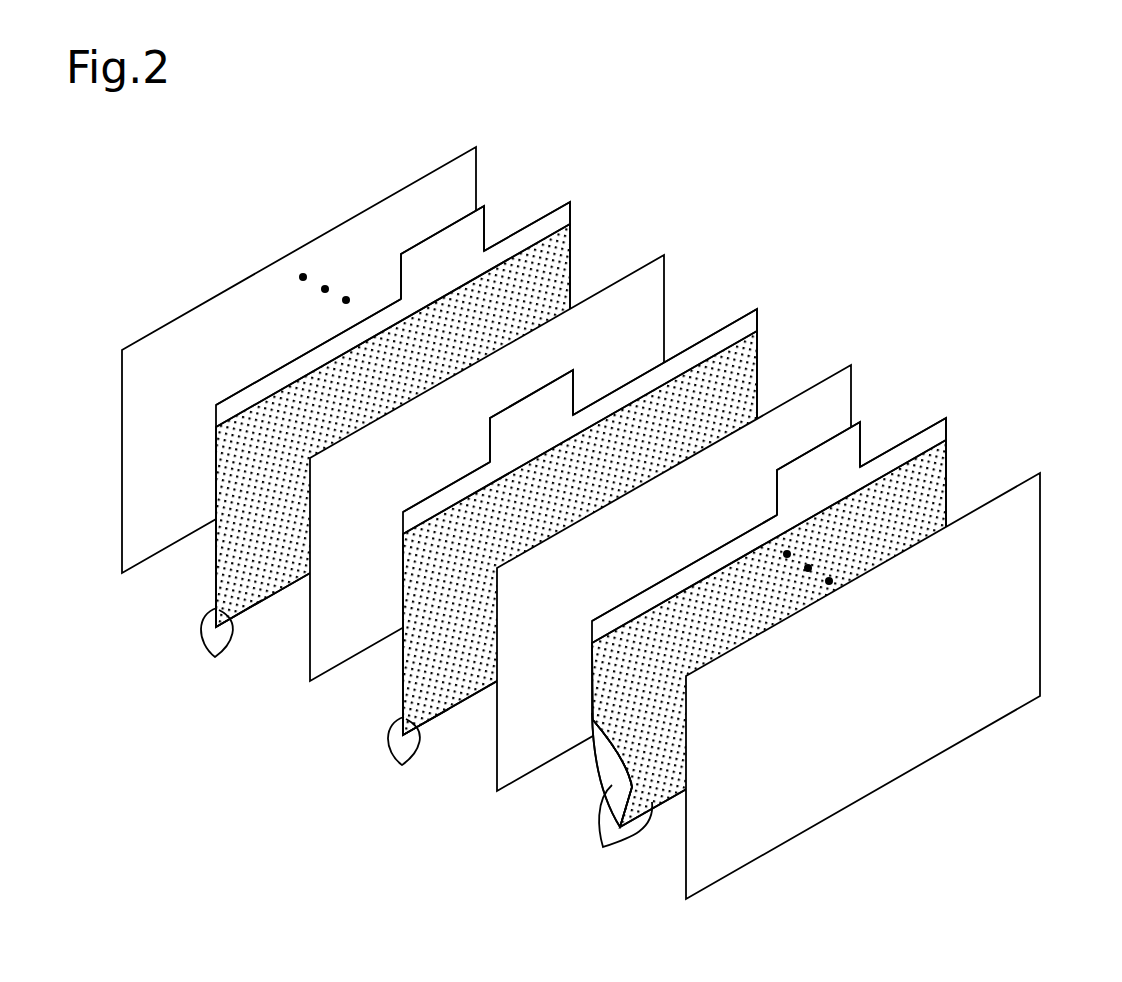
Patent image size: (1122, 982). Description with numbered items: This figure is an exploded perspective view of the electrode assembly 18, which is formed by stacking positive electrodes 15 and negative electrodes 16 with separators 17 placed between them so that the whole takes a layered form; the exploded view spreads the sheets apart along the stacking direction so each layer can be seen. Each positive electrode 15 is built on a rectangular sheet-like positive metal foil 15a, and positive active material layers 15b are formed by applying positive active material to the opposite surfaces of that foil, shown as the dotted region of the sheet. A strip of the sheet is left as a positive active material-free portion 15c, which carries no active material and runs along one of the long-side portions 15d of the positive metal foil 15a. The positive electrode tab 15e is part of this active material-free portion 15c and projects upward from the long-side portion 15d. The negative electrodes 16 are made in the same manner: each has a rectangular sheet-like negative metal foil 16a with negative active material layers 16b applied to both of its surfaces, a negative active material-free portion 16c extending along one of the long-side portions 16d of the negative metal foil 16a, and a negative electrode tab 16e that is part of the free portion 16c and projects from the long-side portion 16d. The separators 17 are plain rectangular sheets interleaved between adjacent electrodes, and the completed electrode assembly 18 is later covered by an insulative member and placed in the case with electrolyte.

The positive electrode 15 is at (759, 365).
The positive metal foil 15a is at (759, 345).
The positive active material layers 15b is at (413, 753).
The positive active material-free portion 15c is at (475, 480).
The long-side portion 15d is at (417, 504).
The positive electrode tab 15e is at (557, 393).
The negative electrode 16 is at (571, 253).
The negative metal foil 16a is at (571, 212).
The negative active material layers 16b is at (421, 741).
The negative active material-free portion 16c is at (303, 362).
The long-side portion 16d is at (244, 387).
The negative electrode tab 16e is at (438, 252).
The separator 17 is at (477, 170).
The electrode assembly 18 is at (922, 222).